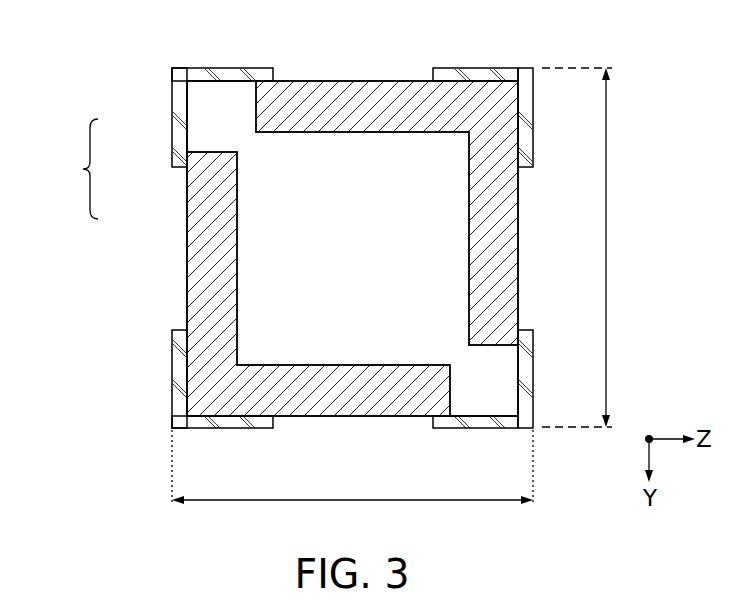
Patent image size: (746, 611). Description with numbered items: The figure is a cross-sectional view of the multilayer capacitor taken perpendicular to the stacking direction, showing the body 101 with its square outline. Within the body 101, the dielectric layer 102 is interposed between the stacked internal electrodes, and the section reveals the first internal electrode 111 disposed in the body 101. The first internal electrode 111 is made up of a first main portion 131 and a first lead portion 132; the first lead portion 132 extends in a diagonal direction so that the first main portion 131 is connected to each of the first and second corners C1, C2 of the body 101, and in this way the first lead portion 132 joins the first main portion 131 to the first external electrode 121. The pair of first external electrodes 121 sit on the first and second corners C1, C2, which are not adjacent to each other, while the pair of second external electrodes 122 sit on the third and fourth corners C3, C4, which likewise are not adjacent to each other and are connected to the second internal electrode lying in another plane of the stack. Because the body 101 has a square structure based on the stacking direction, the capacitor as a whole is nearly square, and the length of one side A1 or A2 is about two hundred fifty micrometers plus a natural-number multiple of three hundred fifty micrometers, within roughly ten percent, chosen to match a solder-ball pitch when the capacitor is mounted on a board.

The body 101 is at (397, 66).
The dielectric layer 102 is at (296, 95).
The first internal electrode 111 is at (68, 169).
The first main portion 131 is at (228, 217).
The first lead portion 132 is at (208, 132).
The first external electrode 121 is at (220, 74).
The second external electrode 122 is at (482, 76).
The first corner C1 is at (178, 62).
The second corner C2 is at (535, 405).
The third corner C3 is at (175, 405).
The fourth corner C4 is at (530, 60).
The length of a side A1 is at (352, 482).
The length of a side A2 is at (592, 247).